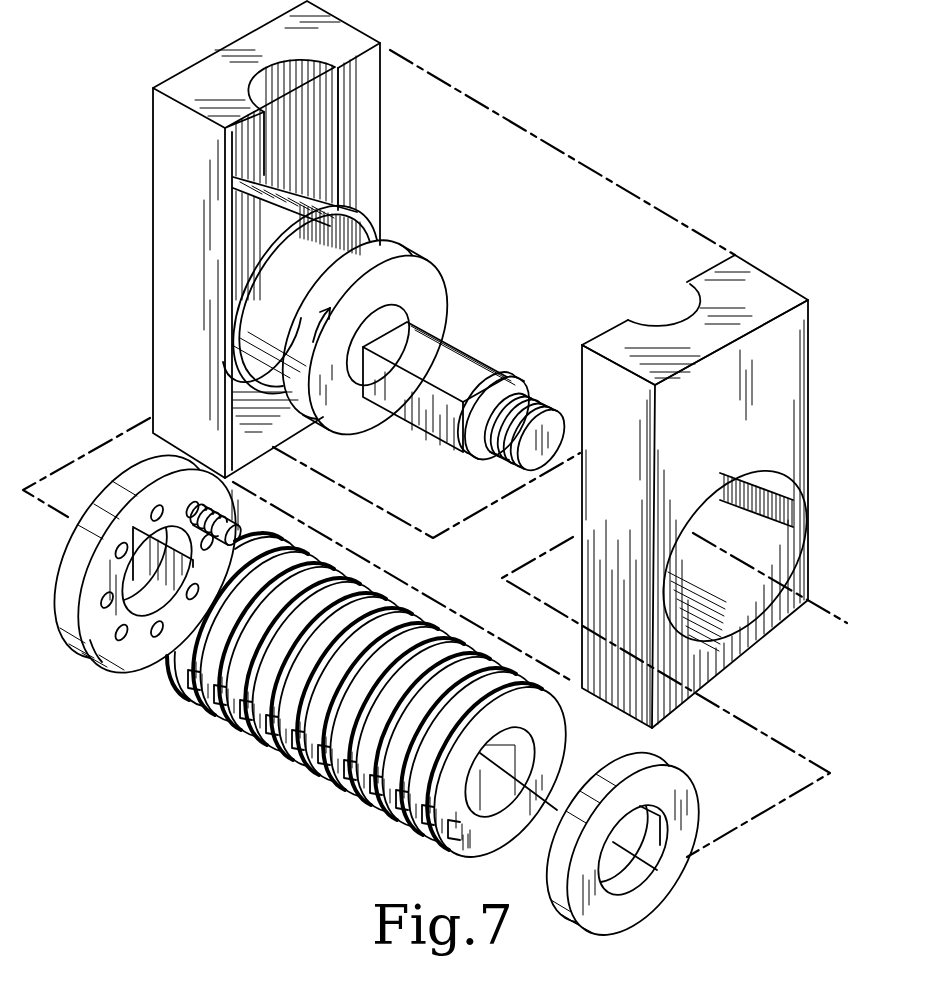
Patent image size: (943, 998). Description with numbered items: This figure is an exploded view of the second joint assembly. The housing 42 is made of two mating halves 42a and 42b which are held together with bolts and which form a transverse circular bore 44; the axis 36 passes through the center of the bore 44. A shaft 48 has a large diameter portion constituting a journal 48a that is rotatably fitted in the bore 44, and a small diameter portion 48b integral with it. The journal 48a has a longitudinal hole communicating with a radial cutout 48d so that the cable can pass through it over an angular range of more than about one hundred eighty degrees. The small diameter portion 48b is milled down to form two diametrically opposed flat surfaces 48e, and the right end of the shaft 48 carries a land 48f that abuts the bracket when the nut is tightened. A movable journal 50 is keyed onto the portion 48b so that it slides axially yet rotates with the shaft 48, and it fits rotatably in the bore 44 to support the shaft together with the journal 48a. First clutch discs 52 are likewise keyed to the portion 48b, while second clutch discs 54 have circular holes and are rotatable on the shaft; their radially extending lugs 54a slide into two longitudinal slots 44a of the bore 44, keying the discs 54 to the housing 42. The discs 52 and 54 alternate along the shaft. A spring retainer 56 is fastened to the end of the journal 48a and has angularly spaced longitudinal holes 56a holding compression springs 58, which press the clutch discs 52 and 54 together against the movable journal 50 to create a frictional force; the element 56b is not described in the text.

The axis 36 is at (814, 605).
The housing 42 is at (700, 184).
The mating half 42a is at (752, 288).
The mating half 42b is at (166, 178).
The transverse circular bore 44 is at (748, 618).
The longitudinal slot 44a is at (238, 350).
The shaft 48 is at (512, 333).
The journal 48a is at (420, 268).
The small diameter portion 48b is at (460, 347).
The radial cutout 48d is at (238, 312).
The flat surface 48e is at (478, 430).
The land 48f is at (523, 380).
The movable journal 50 is at (637, 905).
The first clutch disc 52 is at (380, 706).
The second clutch disc 54 is at (222, 705).
The lug 54a is at (235, 728).
The spring retainer 56 is at (141, 578).
The longitudinal hole 56a is at (100, 605).
The flange face 56b is at (97, 662).
The compression spring 58 is at (243, 523).